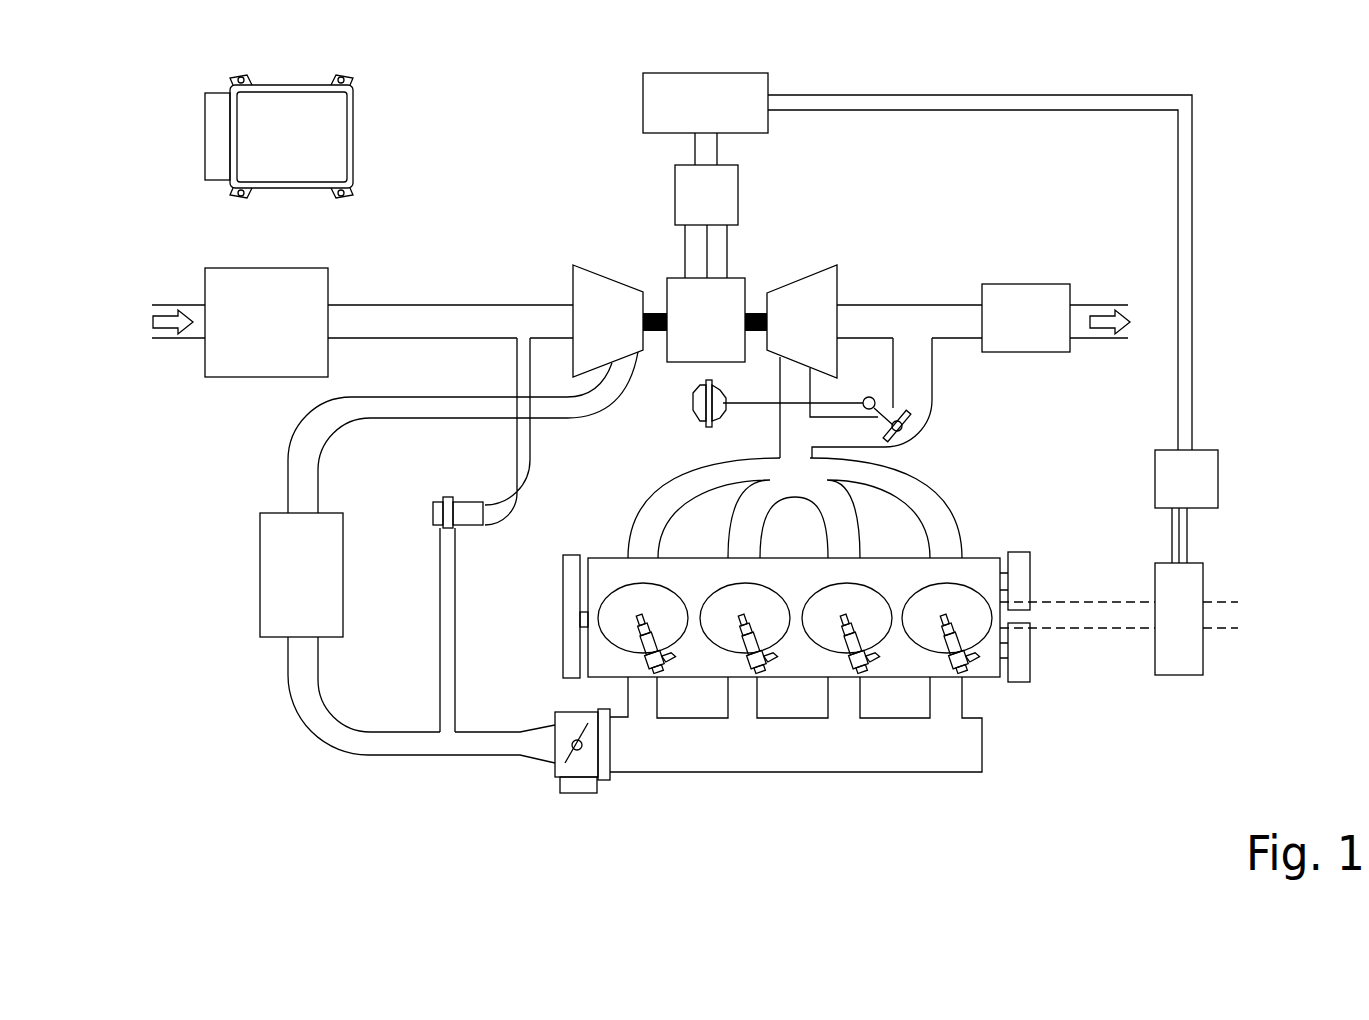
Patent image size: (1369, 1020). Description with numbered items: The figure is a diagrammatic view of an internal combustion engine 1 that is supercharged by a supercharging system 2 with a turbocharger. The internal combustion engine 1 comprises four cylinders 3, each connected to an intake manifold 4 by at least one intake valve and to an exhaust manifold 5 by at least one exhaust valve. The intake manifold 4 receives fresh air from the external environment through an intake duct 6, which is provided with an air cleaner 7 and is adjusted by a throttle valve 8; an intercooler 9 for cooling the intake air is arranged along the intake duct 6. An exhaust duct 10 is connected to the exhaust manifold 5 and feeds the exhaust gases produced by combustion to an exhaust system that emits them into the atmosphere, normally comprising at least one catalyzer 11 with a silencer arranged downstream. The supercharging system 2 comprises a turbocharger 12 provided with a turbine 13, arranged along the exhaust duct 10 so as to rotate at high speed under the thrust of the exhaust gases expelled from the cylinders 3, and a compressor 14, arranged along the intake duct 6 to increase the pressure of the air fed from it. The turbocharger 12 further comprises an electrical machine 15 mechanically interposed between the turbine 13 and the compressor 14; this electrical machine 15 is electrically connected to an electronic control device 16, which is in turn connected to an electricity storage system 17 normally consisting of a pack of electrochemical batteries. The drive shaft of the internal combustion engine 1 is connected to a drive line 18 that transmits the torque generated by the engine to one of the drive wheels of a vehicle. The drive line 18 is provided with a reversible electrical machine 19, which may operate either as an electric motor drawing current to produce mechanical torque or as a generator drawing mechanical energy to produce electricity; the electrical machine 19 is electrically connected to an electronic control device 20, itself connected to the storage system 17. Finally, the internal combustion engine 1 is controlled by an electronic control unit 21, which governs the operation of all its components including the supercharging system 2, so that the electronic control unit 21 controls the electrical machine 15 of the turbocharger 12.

The internal combustion engine 1 is at (180, 840).
The supercharging system 2 is at (513, 191).
The cylinders 3 is at (795, 628).
The intake manifold 4 is at (796, 662).
The exhaust manifold 5 is at (795, 448).
The intake duct 6 is at (300, 478).
The air cleaner 7 is at (266, 322).
The throttle valve 8 is at (577, 768).
The intercooler 9 is at (301, 575).
The exhaust duct 10 is at (959, 318).
The catalyzer 11 is at (1026, 318).
The turbocharger 12 is at (779, 221).
The turbine 13 is at (777, 307).
The compressor 14 is at (606, 298).
The electrical machine 15 is at (705, 320).
The electronic control device 16 is at (706, 179).
The electricity storage system 17 is at (917, 261).
The drive line 18 is at (1100, 652).
The reversible electrical machine 19 is at (1179, 619).
The electronic control device 20 is at (1186, 506).
The electronic control unit 21 is at (279, 136).